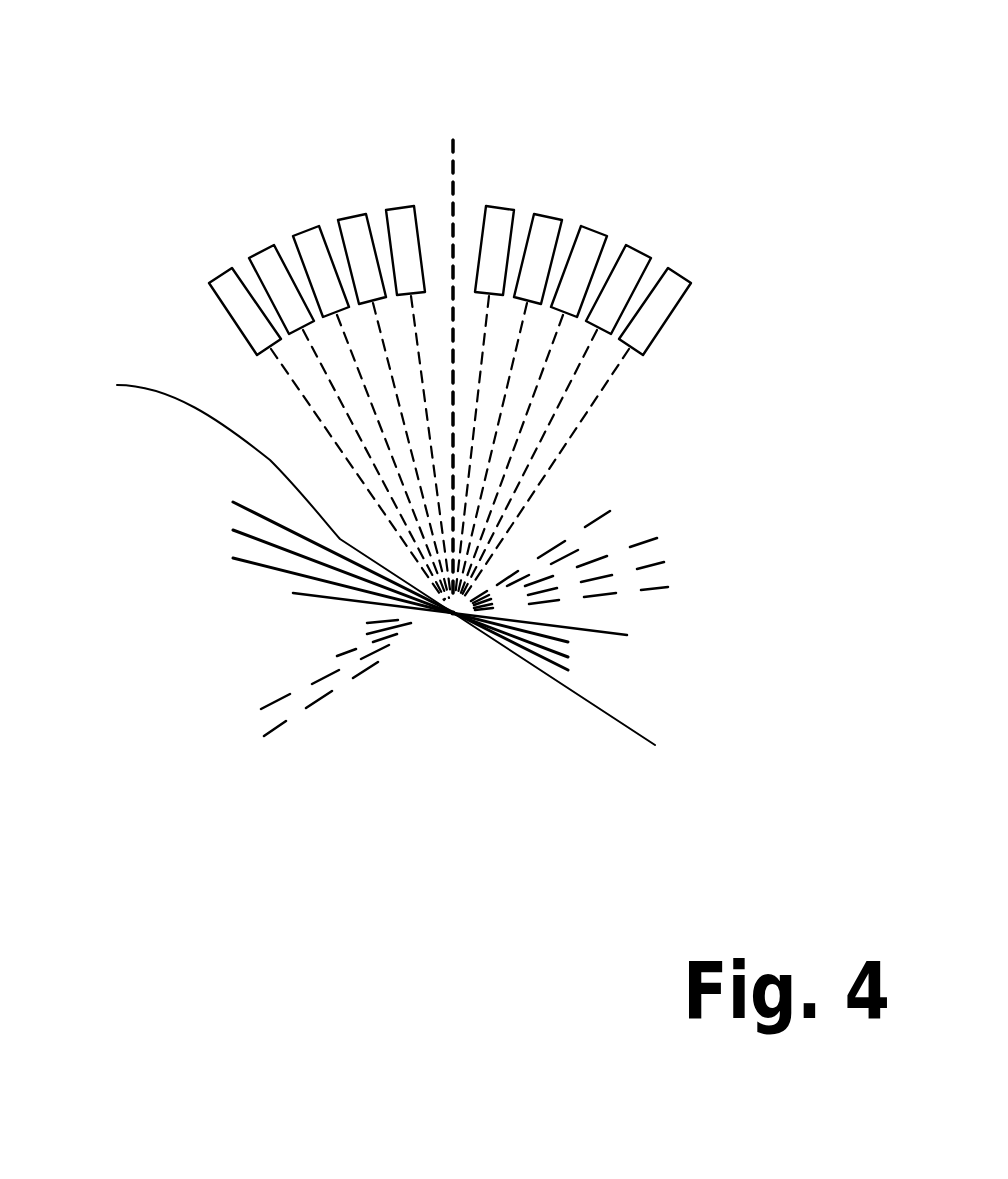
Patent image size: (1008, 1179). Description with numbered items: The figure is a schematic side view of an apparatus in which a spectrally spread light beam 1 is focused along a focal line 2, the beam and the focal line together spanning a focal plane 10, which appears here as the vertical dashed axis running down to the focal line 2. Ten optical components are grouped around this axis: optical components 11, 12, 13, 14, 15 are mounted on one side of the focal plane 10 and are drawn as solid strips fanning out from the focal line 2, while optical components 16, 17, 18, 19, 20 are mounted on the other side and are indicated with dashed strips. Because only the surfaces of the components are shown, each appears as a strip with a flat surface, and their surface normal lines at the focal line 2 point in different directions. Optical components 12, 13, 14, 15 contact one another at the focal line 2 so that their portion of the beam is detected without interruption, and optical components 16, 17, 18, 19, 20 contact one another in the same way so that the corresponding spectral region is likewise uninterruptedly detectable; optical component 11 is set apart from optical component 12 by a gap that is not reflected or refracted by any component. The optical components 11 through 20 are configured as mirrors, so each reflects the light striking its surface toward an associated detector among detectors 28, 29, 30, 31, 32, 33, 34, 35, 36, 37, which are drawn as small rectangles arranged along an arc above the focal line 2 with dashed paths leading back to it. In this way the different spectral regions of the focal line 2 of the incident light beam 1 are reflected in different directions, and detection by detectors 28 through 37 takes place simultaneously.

The spectrally spread light beam 1 is at (455, 182).
The focal plane 10 is at (455, 182).
The focal line 2 is at (453, 617).
The optical component 11 is at (357, 550).
The optical component 12 is at (253, 512).
The optical component 13 is at (238, 536).
The optical component 14 is at (267, 570).
The optical component 15 is at (313, 597).
The optical component 16 is at (642, 590).
The optical component 17 is at (642, 567).
The optical component 18 is at (642, 542).
The optical component 19 is at (558, 558).
The optical component 20 is at (587, 525).
The detector 28 is at (678, 297).
The detector 29 is at (632, 272).
The detector 30 is at (588, 258).
The detector 31 is at (543, 243).
The detector 32 is at (503, 230).
The detector 33 is at (400, 228).
The detector 34 is at (355, 242).
The detector 35 is at (312, 244).
The detector 36 is at (265, 272).
The detector 37 is at (240, 299).